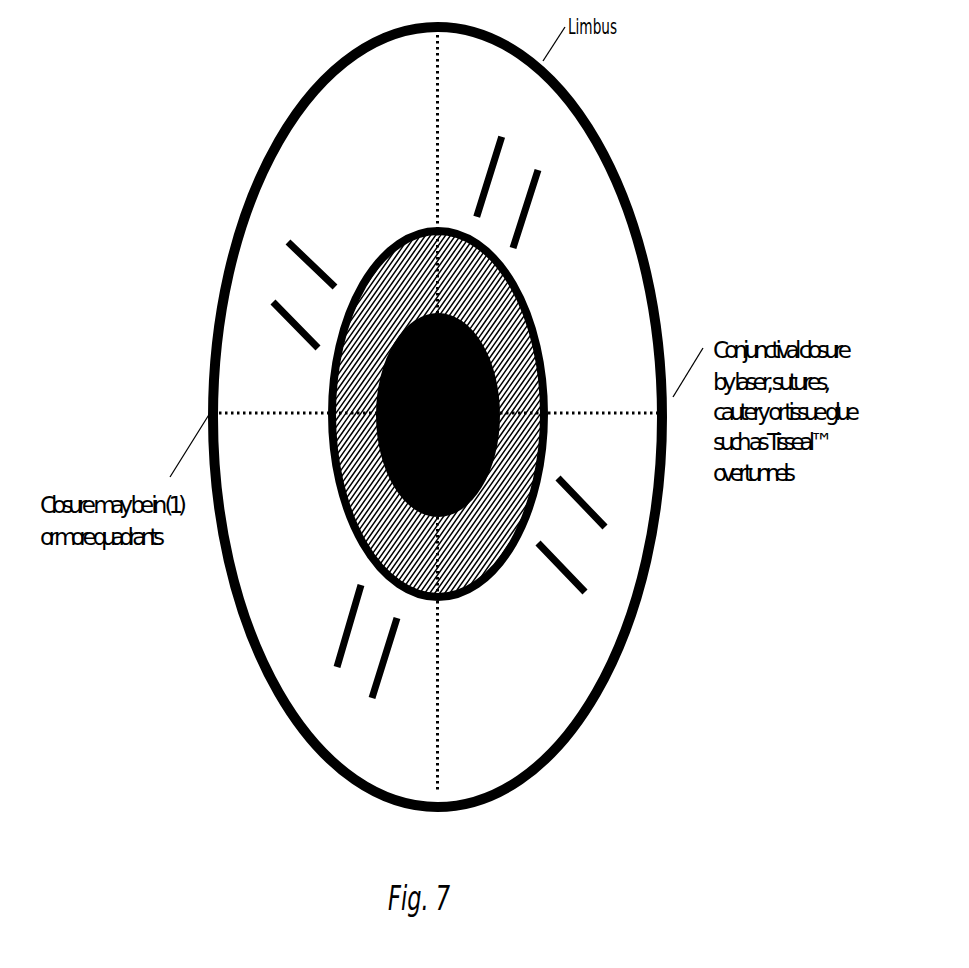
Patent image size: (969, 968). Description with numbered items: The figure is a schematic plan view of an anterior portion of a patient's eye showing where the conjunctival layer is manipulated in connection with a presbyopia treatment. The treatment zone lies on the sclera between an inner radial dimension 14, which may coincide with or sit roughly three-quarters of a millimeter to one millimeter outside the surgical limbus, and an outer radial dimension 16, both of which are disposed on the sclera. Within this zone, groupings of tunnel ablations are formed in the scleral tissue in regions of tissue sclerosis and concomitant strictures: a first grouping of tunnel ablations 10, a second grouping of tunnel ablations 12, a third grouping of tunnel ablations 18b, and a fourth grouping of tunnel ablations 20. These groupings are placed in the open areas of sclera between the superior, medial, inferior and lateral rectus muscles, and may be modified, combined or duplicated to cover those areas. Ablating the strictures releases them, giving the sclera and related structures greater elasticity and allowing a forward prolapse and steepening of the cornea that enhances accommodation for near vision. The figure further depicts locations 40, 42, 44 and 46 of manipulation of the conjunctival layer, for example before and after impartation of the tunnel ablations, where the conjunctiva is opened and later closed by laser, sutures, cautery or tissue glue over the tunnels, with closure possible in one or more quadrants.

The first grouping of tunnel ablations 10 is at (486, 171).
The second grouping of tunnel ablations 12 is at (577, 492).
The inner radial dimension 14 is at (545, 339).
The outer radial dimension 16 is at (646, 237).
The third grouping of tunnel ablations 18b is at (342, 632).
The fourth grouping of tunnel ablations 20 is at (314, 259).
The location of manipulation of the conjunctival layer 40 is at (436, 107).
The location of manipulation of the conjunctival layer 42 is at (588, 400).
The location of manipulation of the conjunctival layer 44 is at (443, 707).
The location of manipulation of the conjunctival layer 46 is at (254, 414).